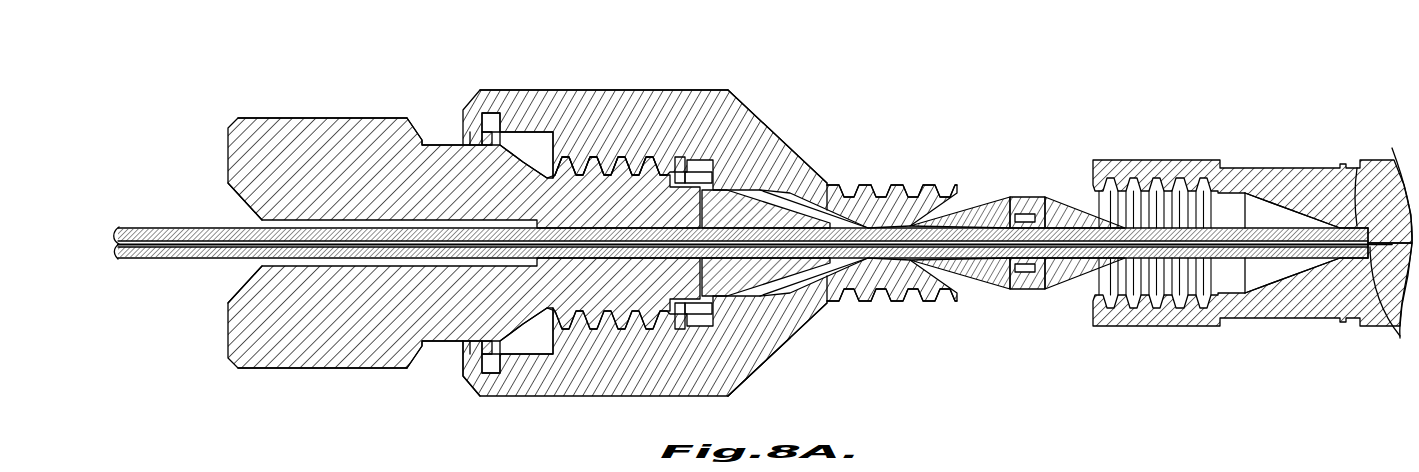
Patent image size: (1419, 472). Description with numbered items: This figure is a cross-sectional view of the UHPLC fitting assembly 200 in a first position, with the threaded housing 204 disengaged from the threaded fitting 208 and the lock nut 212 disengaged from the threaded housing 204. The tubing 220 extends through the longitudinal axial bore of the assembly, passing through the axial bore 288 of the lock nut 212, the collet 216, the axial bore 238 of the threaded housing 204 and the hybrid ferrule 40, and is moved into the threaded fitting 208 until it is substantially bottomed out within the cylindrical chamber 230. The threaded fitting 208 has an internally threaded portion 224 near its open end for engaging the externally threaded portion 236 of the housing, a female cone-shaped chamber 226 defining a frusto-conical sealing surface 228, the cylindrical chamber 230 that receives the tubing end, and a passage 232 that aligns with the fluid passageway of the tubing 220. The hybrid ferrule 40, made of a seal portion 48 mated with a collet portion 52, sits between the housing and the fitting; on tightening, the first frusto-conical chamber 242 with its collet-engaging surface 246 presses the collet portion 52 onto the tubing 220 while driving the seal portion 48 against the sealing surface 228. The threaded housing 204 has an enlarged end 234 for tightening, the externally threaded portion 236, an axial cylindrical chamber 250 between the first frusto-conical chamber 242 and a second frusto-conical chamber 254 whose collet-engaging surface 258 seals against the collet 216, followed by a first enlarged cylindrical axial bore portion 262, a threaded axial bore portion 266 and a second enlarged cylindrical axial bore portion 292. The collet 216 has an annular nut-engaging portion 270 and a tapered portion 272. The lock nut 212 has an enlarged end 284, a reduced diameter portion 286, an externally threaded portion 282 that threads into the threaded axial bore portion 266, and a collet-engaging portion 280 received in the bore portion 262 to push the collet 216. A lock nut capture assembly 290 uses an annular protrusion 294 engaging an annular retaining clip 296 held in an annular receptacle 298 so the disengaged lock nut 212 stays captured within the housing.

The UHPLC fitting assembly 200 is at (235, 100).
The captured lock nut 212 is at (285, 372).
The enlarged end 284 is at (335, 118).
The reduced diameter portion 286 is at (440, 142).
The axial bore 288 is at (258, 218).
The lock nut capture assembly 290 is at (465, 372).
The externally threaded portion 282 is at (600, 110).
The annular retaining clip 296 is at (472, 120).
The annular receptacle 298 is at (493, 113).
The annular protrusion 294 is at (525, 140).
The second enlarged cylindrical axial bore portion 292 is at (560, 158).
The enlarged end 234 is at (640, 95).
The axial bore 238 is at (735, 350).
The threaded axial bore portion 266 is at (680, 160).
The collet-engaging portion 280 is at (728, 130).
The annular nut-engaging portion 270 is at (800, 200).
The first enlarged cylindrical axial bore portion 262 is at (790, 325).
The tapered portion 272 is at (795, 165).
The collet 216 is at (812, 190).
The collet-engaging surface 258 is at (846, 185).
The externally threaded portion 236 is at (905, 185).
The second frusto-conical chamber 254 is at (843, 302).
The axial cylindrical chamber 250 is at (885, 305).
The threaded housing 204 is at (812, 322).
The collet-engaging surface 246 is at (962, 200).
The first frusto-conical chamber 242 is at (980, 290).
The collet portion 52 is at (1020, 197).
The hybrid ferrule 40 is at (1221, 235).
The seal portion 48 is at (1058, 198).
The threaded fitting 208 is at (1245, 328).
The internally threaded portion 224 is at (1172, 178).
The cone-shaped chamber 226 is at (1258, 222).
The frusto-conical sealing surface 228 is at (1283, 200).
The cylindrical chamber 230 is at (1353, 170).
The passage 232 is at (1378, 328).
The tubing 220 is at (160, 262).